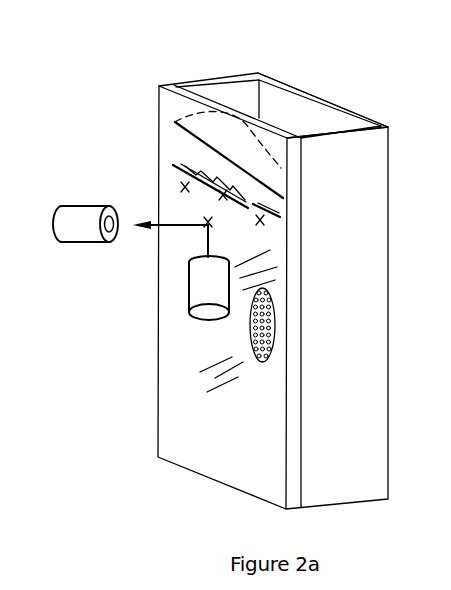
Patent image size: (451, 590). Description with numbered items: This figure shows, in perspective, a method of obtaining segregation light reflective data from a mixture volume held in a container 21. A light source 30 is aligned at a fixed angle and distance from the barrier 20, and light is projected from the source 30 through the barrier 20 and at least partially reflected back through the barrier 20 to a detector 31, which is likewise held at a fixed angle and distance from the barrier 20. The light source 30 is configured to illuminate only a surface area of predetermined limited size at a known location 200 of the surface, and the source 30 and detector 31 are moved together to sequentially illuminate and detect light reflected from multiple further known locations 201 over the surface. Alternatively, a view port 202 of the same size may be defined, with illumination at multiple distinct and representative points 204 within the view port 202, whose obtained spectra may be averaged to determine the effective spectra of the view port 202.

The barrier 20 is at (159, 85).
The container 21 is at (328, 101).
The further known locations 201 is at (183, 184).
The known location 200 is at (207, 228).
The light source 30 is at (188, 305).
The detector 31 is at (68, 206).
The view port 202 is at (263, 362).
The representative points 204 is at (274, 339).